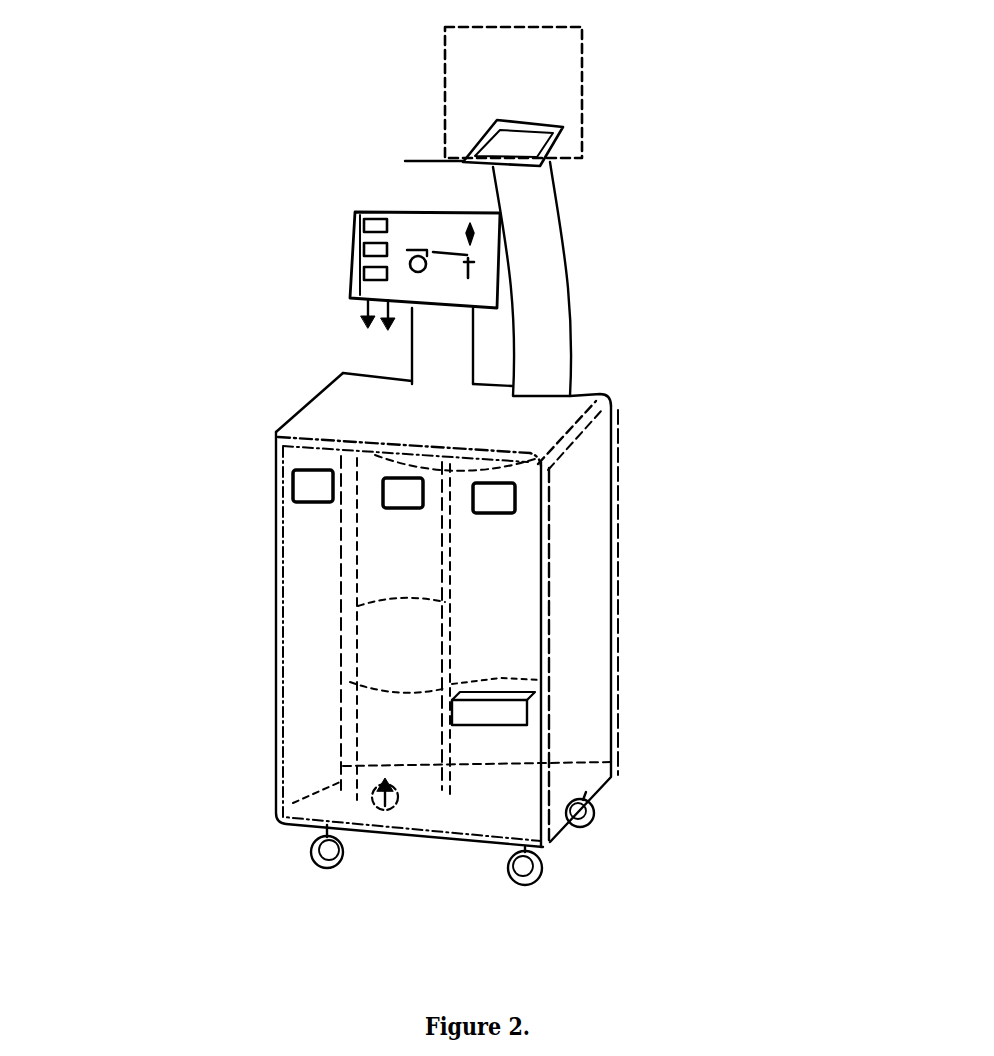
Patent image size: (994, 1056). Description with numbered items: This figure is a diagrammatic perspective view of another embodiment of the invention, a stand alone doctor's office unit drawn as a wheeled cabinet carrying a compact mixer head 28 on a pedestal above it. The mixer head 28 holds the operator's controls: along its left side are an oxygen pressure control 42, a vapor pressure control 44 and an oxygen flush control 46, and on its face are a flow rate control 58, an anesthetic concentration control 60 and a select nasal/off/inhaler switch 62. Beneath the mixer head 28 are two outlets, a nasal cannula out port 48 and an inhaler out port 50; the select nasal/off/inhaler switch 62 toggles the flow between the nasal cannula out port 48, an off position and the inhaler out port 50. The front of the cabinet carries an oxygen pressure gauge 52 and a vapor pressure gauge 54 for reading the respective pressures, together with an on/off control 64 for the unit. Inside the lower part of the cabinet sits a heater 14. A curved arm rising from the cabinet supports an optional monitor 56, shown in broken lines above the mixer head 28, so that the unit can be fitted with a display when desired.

The heater 14 is at (527, 712).
The mixer head 28 is at (420, 211).
The oxygen pressure control 42 is at (360, 218).
The vapor pressure control 44 is at (362, 248).
The oxygen flush control 46 is at (352, 292).
The nasal cannula out port 48 is at (368, 328).
The inhaler out port 50 is at (388, 330).
The oxygen pressure gauge 52 is at (293, 503).
The vapor pressure gauge 54 is at (385, 508).
The optional monitor 56 is at (525, 102).
The flow rate control 58 is at (487, 235).
The anesthetic concentration control 60 is at (473, 264).
The select nasal/off/inhaler switch 62 is at (422, 277).
The on/off control 64 is at (515, 518).